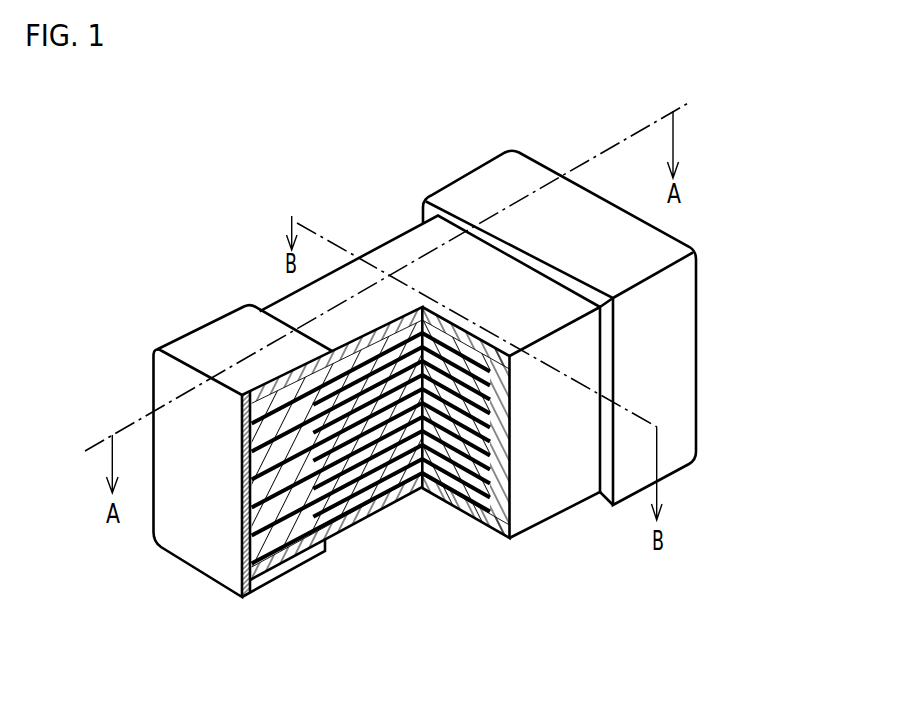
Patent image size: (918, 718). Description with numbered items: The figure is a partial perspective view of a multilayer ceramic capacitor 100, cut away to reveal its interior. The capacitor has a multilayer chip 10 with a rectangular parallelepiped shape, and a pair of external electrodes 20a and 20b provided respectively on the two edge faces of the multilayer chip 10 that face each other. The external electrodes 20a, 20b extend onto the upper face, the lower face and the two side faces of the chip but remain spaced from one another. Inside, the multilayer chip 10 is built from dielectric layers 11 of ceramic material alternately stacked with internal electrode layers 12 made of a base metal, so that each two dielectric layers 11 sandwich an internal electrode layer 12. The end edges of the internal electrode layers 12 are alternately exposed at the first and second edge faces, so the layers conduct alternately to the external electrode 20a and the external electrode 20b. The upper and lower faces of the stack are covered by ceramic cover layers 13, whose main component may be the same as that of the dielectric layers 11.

The multilayer ceramic capacitor 100 is at (788, 89).
The multilayer chip 10 is at (280, 298).
The dielectric layer 11 is at (350, 497).
The internal electrode layer 12 is at (383, 477).
The cover layer 13 is at (400, 250).
The external electrode 20a is at (181, 338).
The external electrode 20b is at (472, 189).